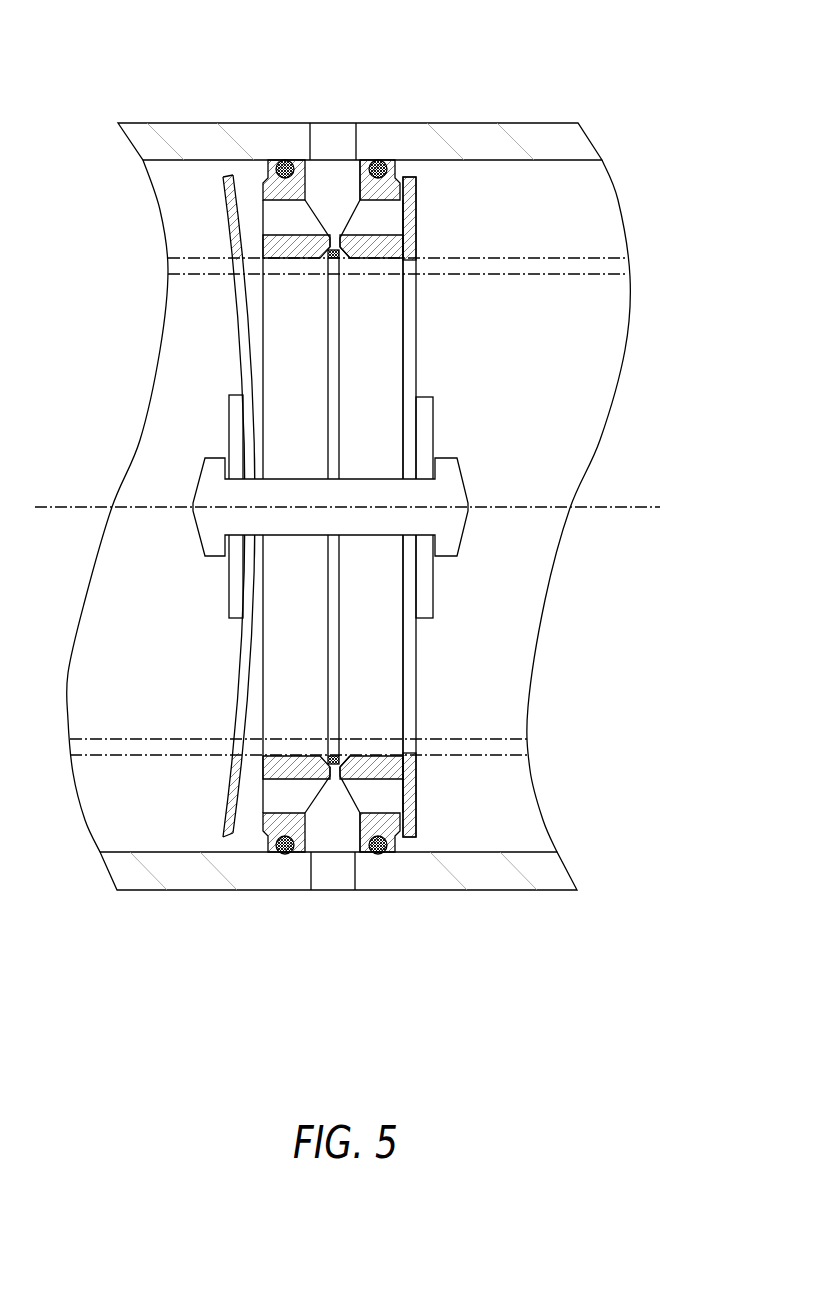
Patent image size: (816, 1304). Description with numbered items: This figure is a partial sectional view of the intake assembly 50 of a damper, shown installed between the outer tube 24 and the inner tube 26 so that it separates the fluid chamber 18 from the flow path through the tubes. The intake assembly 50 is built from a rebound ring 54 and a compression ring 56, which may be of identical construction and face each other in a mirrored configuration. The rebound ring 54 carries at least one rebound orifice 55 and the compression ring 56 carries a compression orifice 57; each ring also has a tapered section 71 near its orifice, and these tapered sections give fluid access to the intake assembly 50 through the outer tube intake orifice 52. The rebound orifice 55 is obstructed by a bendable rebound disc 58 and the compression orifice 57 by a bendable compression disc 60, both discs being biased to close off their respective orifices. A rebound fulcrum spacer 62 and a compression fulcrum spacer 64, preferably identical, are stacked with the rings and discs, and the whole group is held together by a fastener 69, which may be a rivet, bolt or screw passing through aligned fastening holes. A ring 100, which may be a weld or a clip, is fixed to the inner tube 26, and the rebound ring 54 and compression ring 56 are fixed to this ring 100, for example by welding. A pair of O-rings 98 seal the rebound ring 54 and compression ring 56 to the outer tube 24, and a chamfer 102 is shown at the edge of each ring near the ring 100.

The fluid chamber 18 is at (525, 226).
The outer tube 24 is at (515, 123).
The inner tube 26 is at (595, 253).
The intake assembly 50 is at (630, 410).
The outer tube intake orifice 52 is at (338, 140).
The rebound ring 54 is at (282, 379).
The rebound orifice 55 is at (277, 217).
The compression ring 56 is at (360, 379).
The compression orifice 57 is at (392, 217).
The rebound disc 58 is at (225, 212).
The compression disc 60 is at (408, 240).
The rebound fulcrum spacer 62 is at (227, 432).
The compression fulcrum spacer 64 is at (433, 425).
The fastener 69 is at (465, 525).
The tapered section 71 is at (305, 176).
The O-ring 98 is at (360, 178).
The ring 100 is at (330, 258).
The chamfer 102 is at (355, 245).